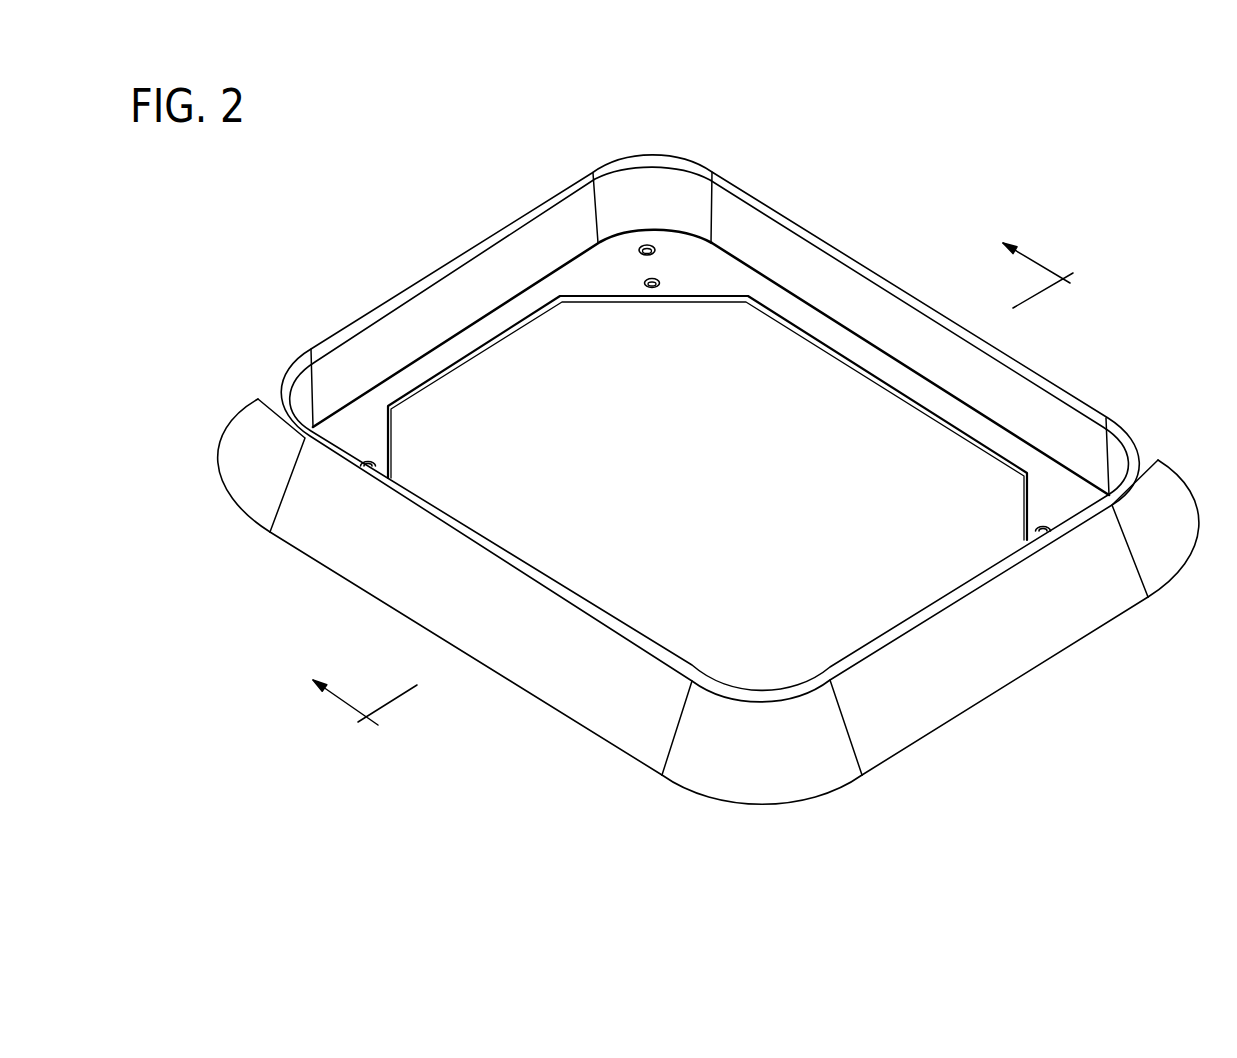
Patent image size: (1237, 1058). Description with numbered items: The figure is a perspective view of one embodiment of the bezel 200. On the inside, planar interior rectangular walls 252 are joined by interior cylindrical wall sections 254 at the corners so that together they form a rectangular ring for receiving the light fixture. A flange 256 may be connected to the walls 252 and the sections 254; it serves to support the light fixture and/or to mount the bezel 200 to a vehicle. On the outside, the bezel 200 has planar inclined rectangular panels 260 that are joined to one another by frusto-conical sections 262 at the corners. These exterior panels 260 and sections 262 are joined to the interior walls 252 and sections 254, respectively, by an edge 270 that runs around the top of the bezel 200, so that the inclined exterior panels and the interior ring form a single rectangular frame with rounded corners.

The bezel 200 is at (1105, 158).
The planar interior rectangular walls 252 is at (508, 303).
The interior cylindrical wall sections 254 is at (678, 212).
The flange 256 is at (440, 366).
The planar inclined rectangular panels 260 is at (551, 649).
The frusto-conical sections 262 is at (283, 474).
The edge 270 is at (676, 153).